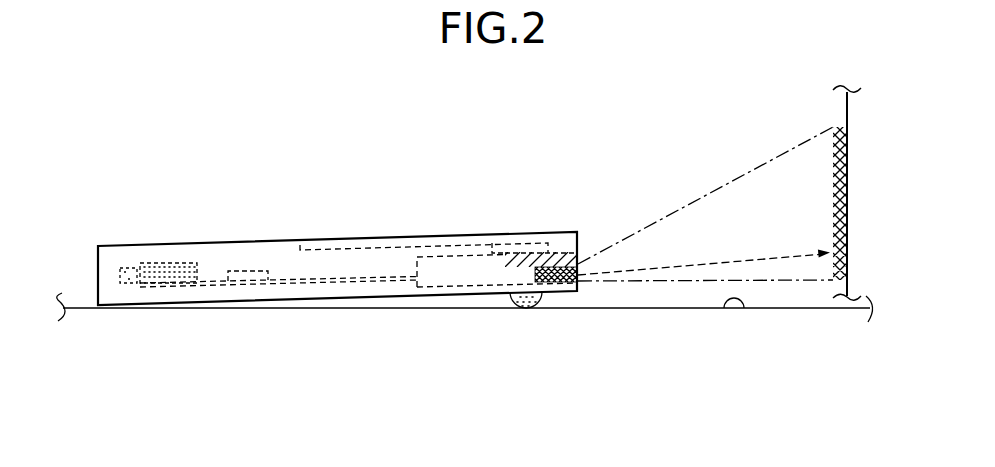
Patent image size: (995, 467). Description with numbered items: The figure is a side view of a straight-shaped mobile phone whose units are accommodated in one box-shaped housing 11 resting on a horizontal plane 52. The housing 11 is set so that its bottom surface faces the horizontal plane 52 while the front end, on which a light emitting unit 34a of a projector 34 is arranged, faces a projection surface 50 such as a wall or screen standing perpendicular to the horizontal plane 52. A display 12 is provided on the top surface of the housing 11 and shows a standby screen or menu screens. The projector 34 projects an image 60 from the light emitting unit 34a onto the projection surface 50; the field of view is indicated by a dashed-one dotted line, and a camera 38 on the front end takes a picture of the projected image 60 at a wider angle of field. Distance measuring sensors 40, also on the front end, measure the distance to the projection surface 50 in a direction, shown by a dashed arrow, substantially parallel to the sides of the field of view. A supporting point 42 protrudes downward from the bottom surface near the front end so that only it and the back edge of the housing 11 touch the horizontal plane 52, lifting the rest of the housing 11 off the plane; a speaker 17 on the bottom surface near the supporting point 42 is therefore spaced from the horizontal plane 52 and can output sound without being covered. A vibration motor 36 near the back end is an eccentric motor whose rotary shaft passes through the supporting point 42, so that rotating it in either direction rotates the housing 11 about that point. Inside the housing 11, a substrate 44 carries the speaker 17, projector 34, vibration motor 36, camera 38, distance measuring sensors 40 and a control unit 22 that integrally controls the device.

The housing 11 is at (283, 241).
The display 12 is at (380, 247).
The projector 34 is at (492, 253).
The light emitting unit 34a is at (590, 265).
The camera 38 is at (559, 255).
The vibration motor 36 is at (168, 263).
The control unit 22 is at (248, 270).
The substrate 44 is at (345, 280).
The speaker 17 is at (483, 294).
The distance measuring sensor 40 is at (560, 293).
The supporting point 42 is at (525, 306).
The projection surface 50 is at (847, 96).
The image 60 is at (833, 208).
The horizontal plane 52 is at (742, 309).